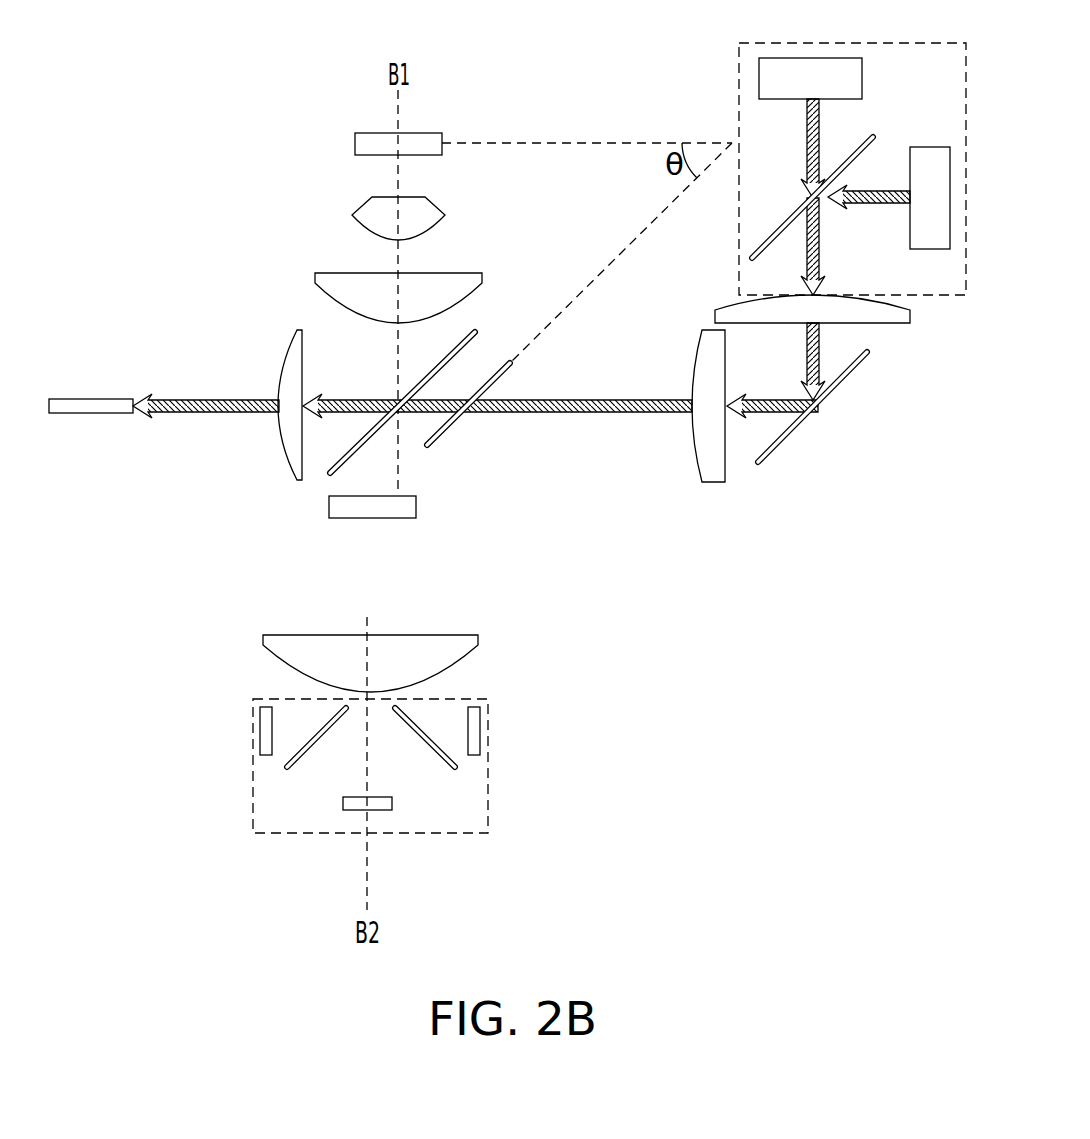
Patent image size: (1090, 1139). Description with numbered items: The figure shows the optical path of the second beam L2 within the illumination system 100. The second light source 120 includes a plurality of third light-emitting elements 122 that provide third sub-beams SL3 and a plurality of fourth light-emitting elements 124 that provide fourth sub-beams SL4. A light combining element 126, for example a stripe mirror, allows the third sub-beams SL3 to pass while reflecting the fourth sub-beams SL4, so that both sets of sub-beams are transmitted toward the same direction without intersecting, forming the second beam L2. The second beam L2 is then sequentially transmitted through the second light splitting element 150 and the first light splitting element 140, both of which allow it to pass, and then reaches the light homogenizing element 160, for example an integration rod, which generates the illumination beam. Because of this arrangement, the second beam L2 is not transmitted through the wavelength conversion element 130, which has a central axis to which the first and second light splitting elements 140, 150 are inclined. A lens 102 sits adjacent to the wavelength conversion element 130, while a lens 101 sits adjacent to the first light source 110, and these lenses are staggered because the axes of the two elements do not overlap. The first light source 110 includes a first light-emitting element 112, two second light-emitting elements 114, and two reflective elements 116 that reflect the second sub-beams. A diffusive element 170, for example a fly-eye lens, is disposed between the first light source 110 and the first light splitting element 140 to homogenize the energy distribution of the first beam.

The illumination system 100 is at (802, 925).
The lens 101 is at (470, 645).
The lens 102 is at (316, 276).
The first light source 110 is at (257, 703).
The first light-emitting element 112 is at (385, 809).
The second light-emitting element 114 is at (264, 728).
The reflective element 116 is at (313, 750).
The second light source 120 is at (738, 72).
The third light-emitting element 122 is at (821, 70).
The fourth light-emitting element 124 is at (930, 155).
The light combining element 126 is at (755, 248).
The wavelength conversion element 130 is at (355, 146).
The first light splitting element 140 is at (478, 336).
The second light splitting element 150 is at (443, 433).
The light homogenizing element 160 is at (88, 405).
The diffusive element 170 is at (417, 507).
The second beam L2 is at (201, 404).
The third sub-beam SL3 is at (806, 128).
The fourth sub-beam SL4 is at (889, 191).